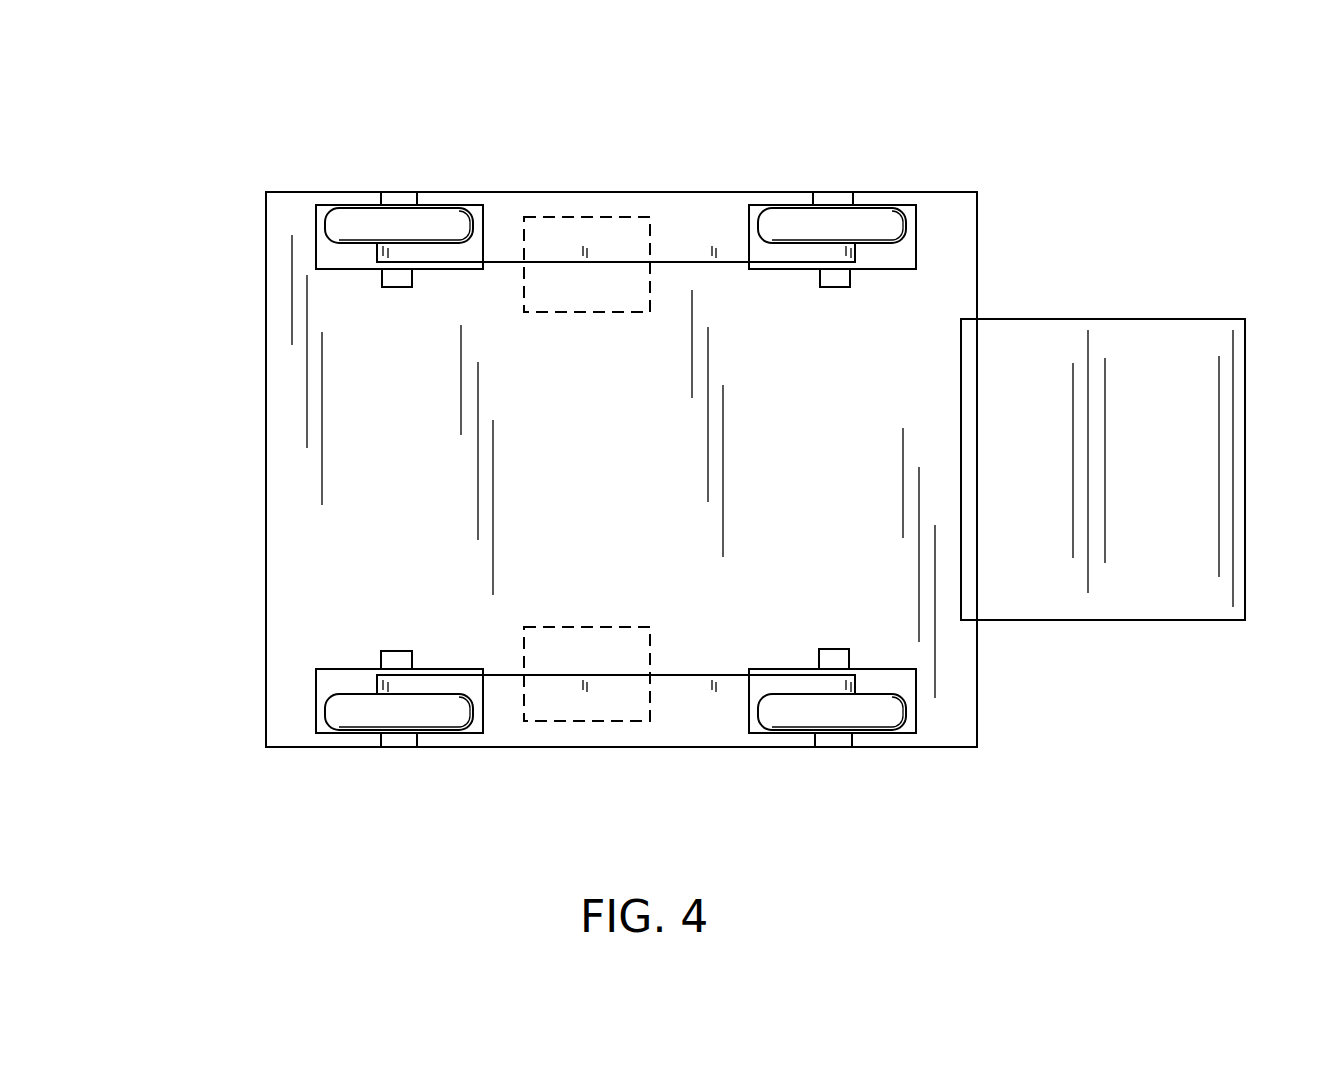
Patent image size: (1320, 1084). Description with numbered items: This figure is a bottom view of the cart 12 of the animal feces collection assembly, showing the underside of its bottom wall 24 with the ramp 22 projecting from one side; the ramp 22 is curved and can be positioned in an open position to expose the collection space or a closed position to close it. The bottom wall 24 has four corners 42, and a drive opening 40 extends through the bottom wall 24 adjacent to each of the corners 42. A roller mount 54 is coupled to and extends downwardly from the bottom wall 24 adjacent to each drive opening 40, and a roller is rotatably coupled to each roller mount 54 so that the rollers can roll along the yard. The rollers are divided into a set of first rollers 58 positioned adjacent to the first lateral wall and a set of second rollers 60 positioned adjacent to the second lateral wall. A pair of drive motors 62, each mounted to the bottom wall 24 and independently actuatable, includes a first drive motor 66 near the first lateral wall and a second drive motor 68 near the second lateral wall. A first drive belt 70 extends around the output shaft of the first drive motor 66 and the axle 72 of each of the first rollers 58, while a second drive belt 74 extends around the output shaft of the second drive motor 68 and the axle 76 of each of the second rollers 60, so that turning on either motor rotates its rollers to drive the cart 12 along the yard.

The cart 12 is at (944, 150).
The ramp 22 is at (1160, 340).
The bottom wall 24 is at (302, 417).
The drive openings 40 is at (335, 268).
The corners 42 is at (266, 192).
The roller mounts 54 is at (418, 197).
The first rollers 58 is at (355, 222).
The second rollers 60 is at (352, 713).
The drive motors 62 is at (614, 459).
The first drive motor 66 is at (557, 217).
The second drive motor 68 is at (648, 722).
The first drive belt 70 is at (605, 255).
The axle 72 is at (383, 268).
The second drive belt 74 is at (608, 680).
The axle 76 is at (383, 670).